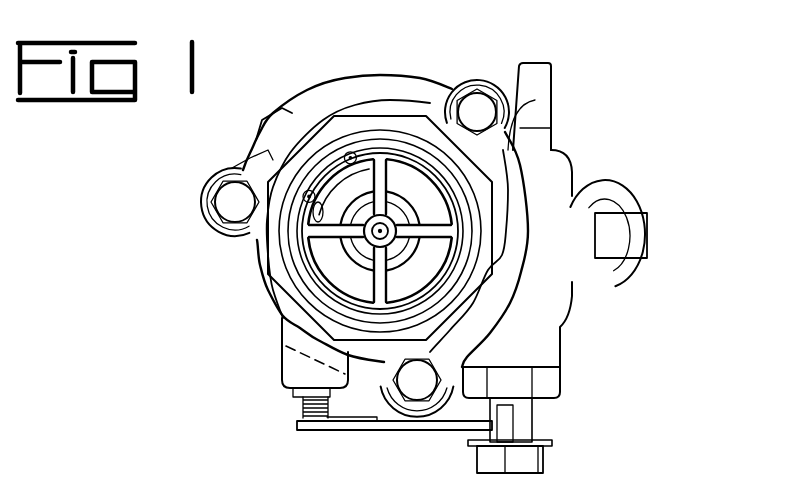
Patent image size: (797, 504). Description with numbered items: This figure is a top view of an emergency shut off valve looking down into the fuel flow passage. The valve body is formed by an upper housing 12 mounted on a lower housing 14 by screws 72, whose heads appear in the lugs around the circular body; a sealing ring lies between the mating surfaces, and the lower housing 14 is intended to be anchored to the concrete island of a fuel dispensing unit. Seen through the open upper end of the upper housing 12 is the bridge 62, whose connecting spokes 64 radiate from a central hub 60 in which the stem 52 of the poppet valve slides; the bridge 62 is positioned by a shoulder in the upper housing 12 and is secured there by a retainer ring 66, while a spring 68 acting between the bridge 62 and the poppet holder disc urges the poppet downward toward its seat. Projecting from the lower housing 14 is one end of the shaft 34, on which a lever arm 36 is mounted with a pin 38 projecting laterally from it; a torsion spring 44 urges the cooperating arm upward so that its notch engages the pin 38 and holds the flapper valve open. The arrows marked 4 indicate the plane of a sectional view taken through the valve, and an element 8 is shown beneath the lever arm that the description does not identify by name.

The section line 4- 4 is at (120, 172).
The mounting plate 8 is at (478, 452).
The upper housing 12 is at (511, 307).
The lower housing 14 is at (561, 348).
The shaft 34 is at (530, 413).
The lever arm 36 is at (547, 447).
The pin 38 is at (543, 438).
The torsion spring 44 is at (300, 407).
The stem 52 is at (397, 218).
The hub 60 is at (353, 265).
The bridge 62 is at (320, 268).
The connecting spokes 64 is at (408, 265).
The retainer ring 66 is at (358, 232).
The spring 68 is at (349, 178).
The screws 72 is at (232, 182).